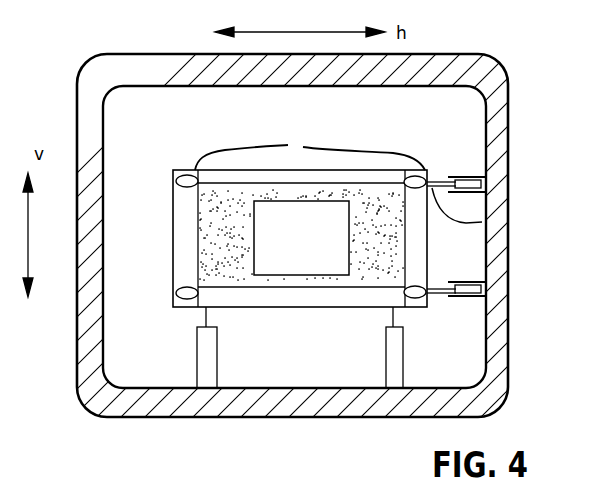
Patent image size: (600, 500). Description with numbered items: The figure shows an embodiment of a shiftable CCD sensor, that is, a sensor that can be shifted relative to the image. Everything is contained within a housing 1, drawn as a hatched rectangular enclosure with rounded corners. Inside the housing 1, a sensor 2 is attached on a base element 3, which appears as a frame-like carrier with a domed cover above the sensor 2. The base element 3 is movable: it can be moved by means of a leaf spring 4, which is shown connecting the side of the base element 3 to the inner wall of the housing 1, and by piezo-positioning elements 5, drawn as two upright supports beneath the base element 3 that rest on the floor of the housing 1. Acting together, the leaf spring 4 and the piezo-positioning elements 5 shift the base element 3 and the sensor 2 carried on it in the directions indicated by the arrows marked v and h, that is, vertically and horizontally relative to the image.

The housing 1 is at (505, 120).
The sensor 2 is at (306, 249).
The base element 3 is at (310, 146).
The leaf spring 4 is at (482, 222).
The piezo-positioning elements 5 is at (212, 339).